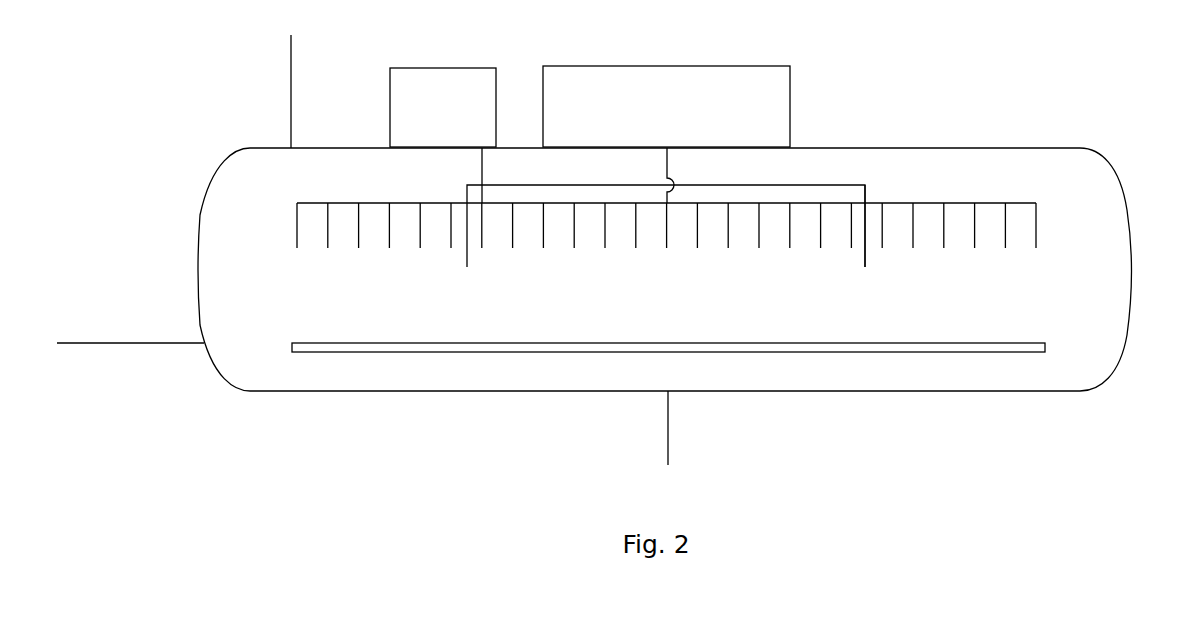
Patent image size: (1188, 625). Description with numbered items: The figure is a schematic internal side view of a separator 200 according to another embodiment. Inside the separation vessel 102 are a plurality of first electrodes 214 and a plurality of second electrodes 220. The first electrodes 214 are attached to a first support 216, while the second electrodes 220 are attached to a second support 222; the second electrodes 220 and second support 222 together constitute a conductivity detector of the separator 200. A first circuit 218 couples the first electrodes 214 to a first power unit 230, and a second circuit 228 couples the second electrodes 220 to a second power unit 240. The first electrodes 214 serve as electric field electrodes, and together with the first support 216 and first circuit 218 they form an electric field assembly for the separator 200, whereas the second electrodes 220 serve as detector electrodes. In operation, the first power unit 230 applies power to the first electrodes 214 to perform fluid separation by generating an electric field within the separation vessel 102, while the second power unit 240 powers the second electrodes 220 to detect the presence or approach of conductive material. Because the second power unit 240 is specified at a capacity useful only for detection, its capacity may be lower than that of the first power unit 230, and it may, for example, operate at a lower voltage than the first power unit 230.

The separator 200 is at (226, 60).
The separation vessel 102 is at (1113, 177).
The second power unit 240 is at (466, 125).
The first power unit 230 is at (686, 125).
The first support 216 is at (373, 203).
The first electrodes 214 is at (359, 252).
The second circuit 228 is at (482, 168).
The first circuit 218 is at (667, 170).
The second electrodes 220 is at (467, 267).
The second support 222 is at (865, 185).